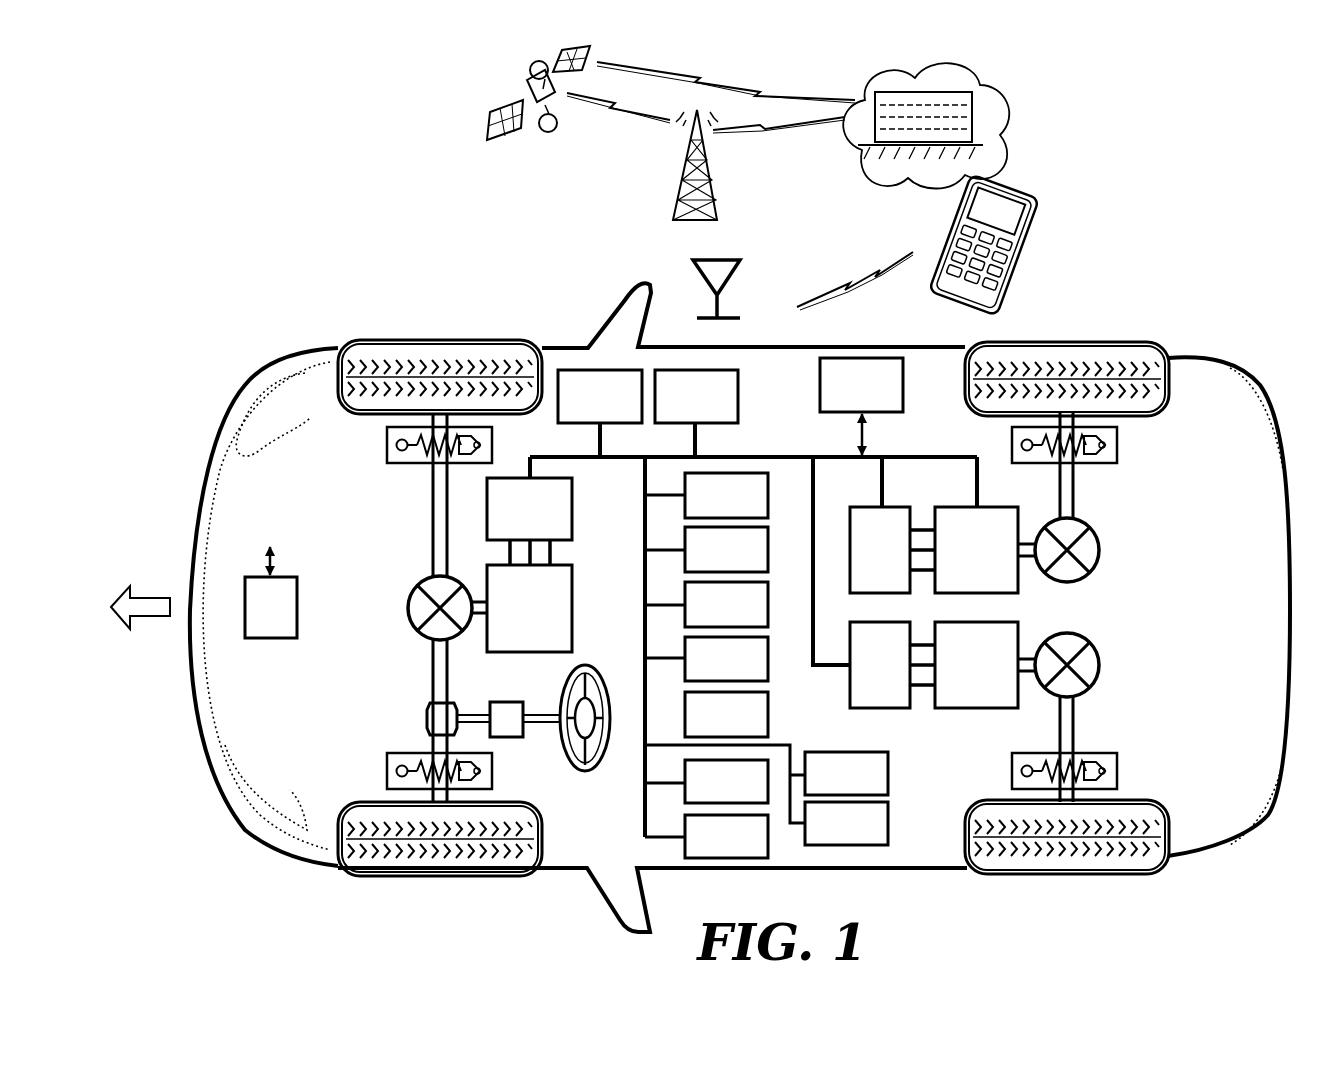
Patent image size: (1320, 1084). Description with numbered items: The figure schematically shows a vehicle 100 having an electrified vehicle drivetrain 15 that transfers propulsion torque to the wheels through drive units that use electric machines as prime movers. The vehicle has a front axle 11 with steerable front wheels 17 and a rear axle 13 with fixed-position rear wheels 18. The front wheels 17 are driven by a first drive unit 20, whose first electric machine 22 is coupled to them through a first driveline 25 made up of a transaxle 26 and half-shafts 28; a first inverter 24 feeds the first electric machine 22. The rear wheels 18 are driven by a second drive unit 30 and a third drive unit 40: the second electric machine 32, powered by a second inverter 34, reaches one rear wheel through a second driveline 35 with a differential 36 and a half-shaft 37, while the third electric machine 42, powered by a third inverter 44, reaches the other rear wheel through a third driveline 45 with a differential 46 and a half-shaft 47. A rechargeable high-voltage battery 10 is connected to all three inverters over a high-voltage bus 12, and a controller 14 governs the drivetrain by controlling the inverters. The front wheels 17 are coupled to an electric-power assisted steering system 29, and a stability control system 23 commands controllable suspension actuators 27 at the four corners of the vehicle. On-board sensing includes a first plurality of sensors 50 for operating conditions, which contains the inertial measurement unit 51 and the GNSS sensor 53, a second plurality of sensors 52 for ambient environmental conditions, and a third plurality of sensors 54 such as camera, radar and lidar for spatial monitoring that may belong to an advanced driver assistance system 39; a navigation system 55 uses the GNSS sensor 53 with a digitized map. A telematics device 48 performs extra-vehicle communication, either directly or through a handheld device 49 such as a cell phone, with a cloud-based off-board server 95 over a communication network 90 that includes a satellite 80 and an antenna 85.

The vehicle 100 is at (295, 298).
The rechargeable high-voltage DC power source (battery) 10 is at (600, 413).
The front axle 11 is at (406, 617).
The high-voltage bus 12 is at (740, 457).
The rear axle 13 is at (1090, 612).
The controller 14 is at (861, 406).
The electrified vehicle (EV) drivetrain 15 is at (1182, 552).
The front wheels 17 is at (430, 340).
The rear wheels 18 is at (1093, 343).
The first drive unit 20 is at (564, 568).
The first electric machine 22 is at (578, 613).
The stability control system 23 is at (271, 592).
The first inverter 24 is at (529, 509).
The first driveline 25 is at (398, 591).
The transaxle 26 is at (410, 605).
The suspension actuators 27 is at (387, 445).
The half-shafts 28 is at (433, 508).
The electric-power assisted steering system 29 is at (427, 718).
The second drive unit 30 is at (953, 738).
The second electric machine 32 is at (976, 665).
The second inverter 34 is at (880, 665).
The second driveline 35 is at (1108, 660).
The differential 36 is at (1100, 668).
The half-shaft 37 is at (1073, 717).
The advanced driver assistance system (ADAS) 39 is at (846, 773).
The third drive unit 40 is at (1033, 508).
The third electric machine 42 is at (976, 550).
The third inverter 44 is at (880, 550).
The third driveline 45 is at (1105, 560).
The differential 46 is at (1100, 548).
The half-shaft 47 is at (1073, 495).
The telematics device 48 is at (696, 413).
The handheld device 49 is at (984, 244).
The first plurality of sensors 50 is at (726, 495).
The inertial measurement unit (IMU) 51 is at (726, 549).
The second plurality of sensors 52 is at (726, 604).
The global navigation satellite system (GNSS) sensor 53 is at (726, 659).
The third plurality of sensors 54 is at (726, 714).
The navigation system 55 is at (726, 781).
The satellite 80 is at (557, 107).
The antenna 85 is at (707, 167).
The communication network 90 is at (713, 100).
The off-board server 95 is at (977, 112).